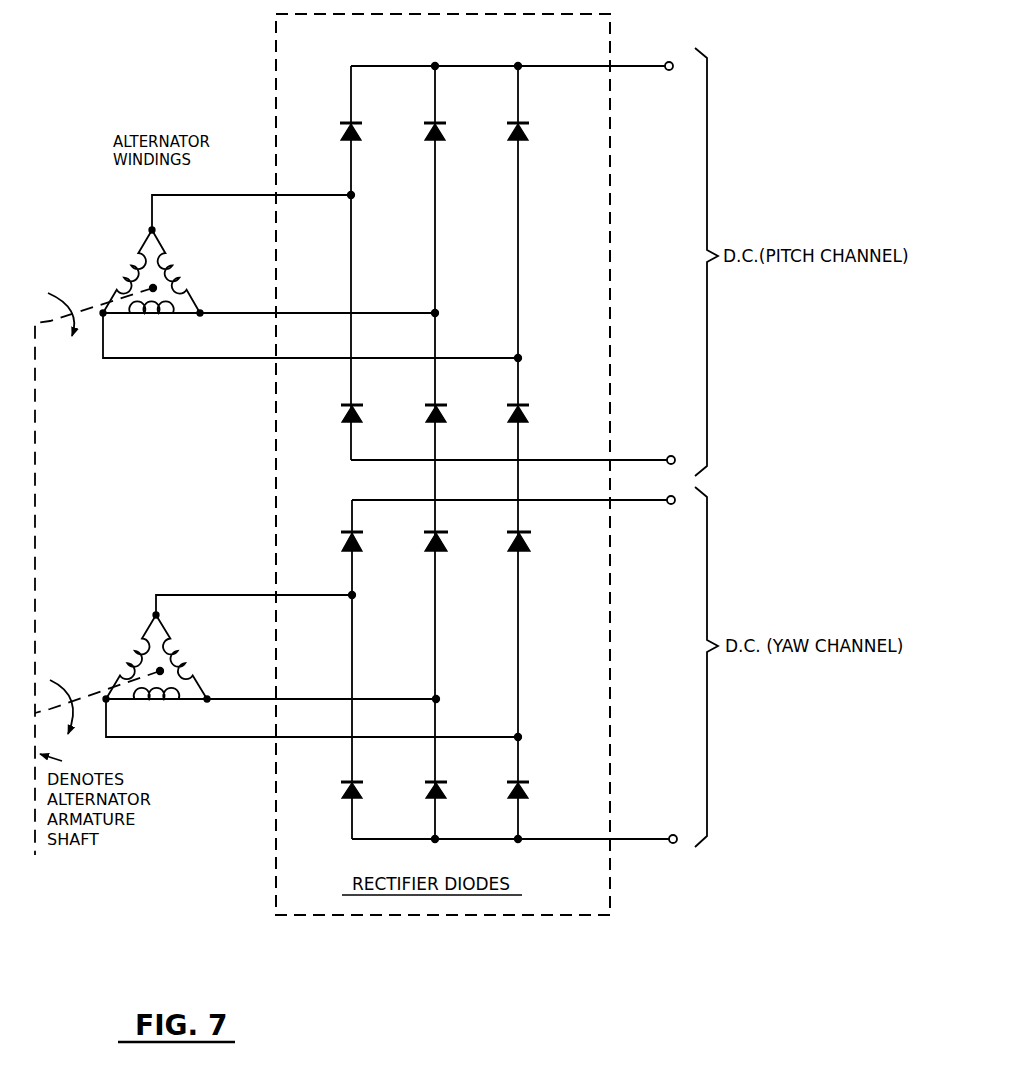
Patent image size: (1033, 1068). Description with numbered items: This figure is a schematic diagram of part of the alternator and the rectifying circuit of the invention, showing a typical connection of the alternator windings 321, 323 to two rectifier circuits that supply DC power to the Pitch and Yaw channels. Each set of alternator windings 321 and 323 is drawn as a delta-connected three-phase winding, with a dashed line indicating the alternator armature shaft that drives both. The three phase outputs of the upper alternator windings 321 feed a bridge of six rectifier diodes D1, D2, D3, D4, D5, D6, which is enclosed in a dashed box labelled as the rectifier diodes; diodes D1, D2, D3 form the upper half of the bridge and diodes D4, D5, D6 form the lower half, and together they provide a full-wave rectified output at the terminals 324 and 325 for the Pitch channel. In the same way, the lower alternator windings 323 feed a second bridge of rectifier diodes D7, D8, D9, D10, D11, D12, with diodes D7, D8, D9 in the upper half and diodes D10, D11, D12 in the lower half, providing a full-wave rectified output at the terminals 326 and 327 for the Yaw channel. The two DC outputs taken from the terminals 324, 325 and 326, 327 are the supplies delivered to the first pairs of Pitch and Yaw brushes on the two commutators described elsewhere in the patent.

The alternator windings 321 is at (186, 258).
The alternator windings 323 is at (192, 641).
The terminal 324 is at (671, 61).
The terminal 325 is at (669, 455).
The terminal 326 is at (671, 505).
The terminal 327 is at (673, 833).
The rectifier diode D1 is at (362, 130).
The rectifier diode D2 is at (447, 129).
The rectifier diode D3 is at (523, 136).
The rectifier diode D4 is at (363, 410).
The rectifier diode D5 is at (448, 410).
The rectifier diode D6 is at (530, 411).
The rectifier diode D7 is at (362, 546).
The rectifier diode D8 is at (446, 545).
The rectifier diode D9 is at (528, 545).
The rectifier diode D10 is at (363, 783).
The rectifier diode D11 is at (447, 782).
The rectifier diode D12 is at (528, 782).